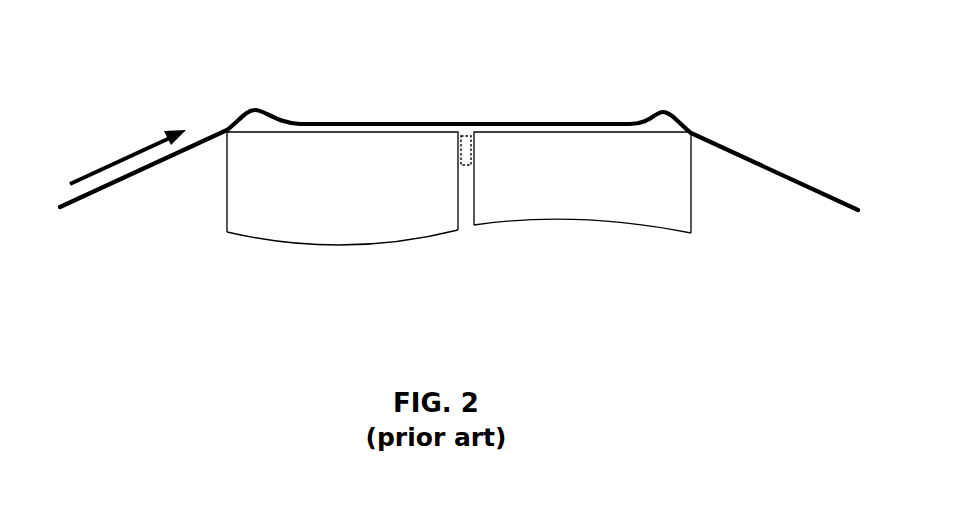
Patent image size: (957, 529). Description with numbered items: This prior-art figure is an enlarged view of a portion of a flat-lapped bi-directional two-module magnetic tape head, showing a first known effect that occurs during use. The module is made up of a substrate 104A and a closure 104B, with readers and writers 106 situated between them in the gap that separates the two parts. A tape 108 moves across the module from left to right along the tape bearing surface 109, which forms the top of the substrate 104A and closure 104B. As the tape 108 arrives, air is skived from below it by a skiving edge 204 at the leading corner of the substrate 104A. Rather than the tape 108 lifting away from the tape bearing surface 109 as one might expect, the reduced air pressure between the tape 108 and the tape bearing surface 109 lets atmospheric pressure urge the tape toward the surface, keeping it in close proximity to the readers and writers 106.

The skiving edge 204 is at (216, 140).
The tape 108 is at (345, 122).
The substrate 104A is at (327, 229).
The closure 104B is at (602, 200).
The readers and writers 106 is at (465, 131).
The tape bearing surface 109 is at (584, 116).